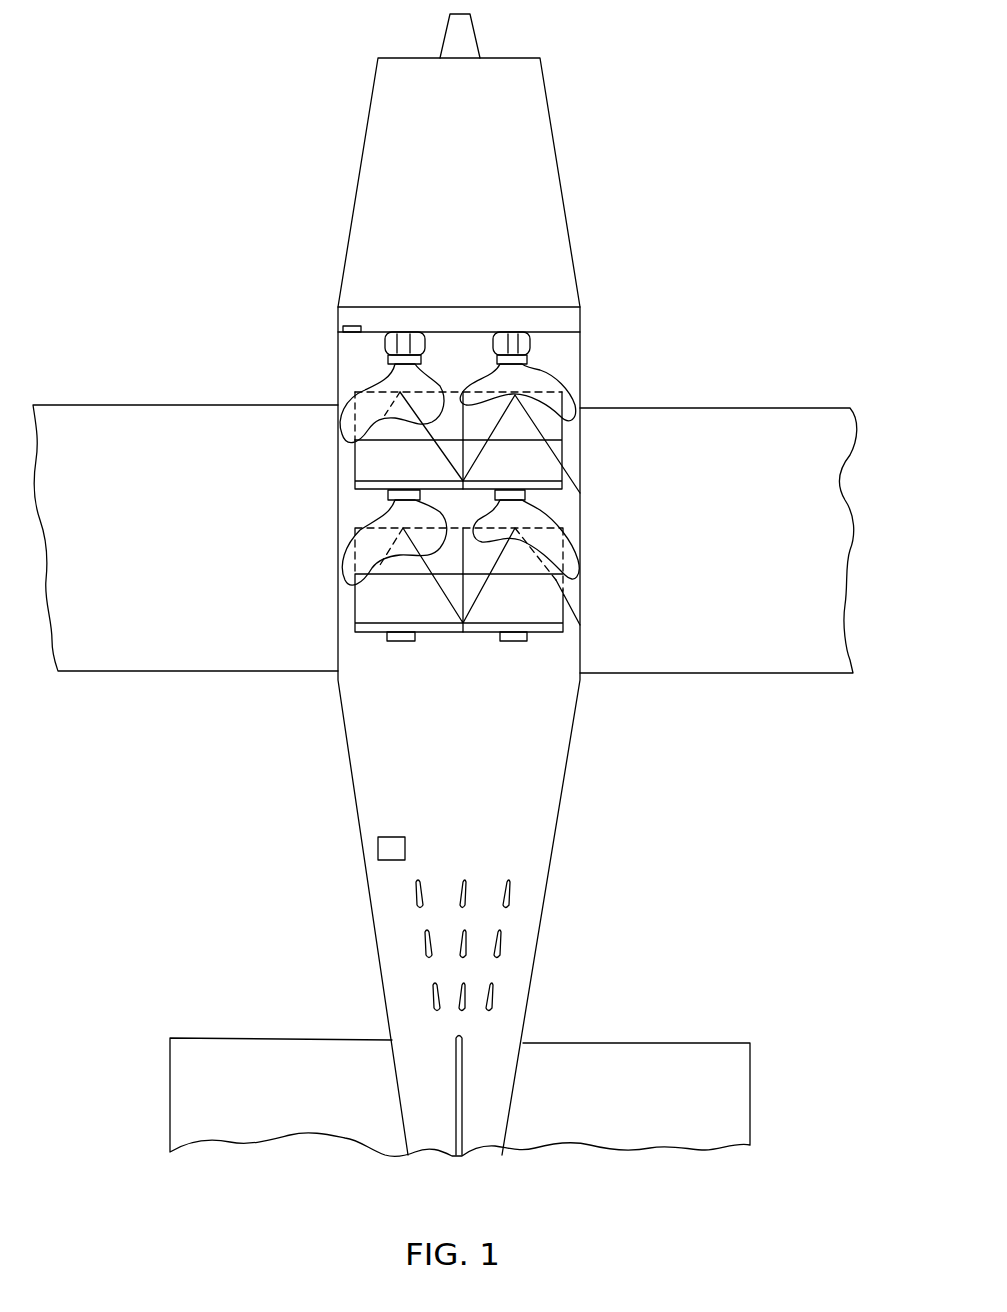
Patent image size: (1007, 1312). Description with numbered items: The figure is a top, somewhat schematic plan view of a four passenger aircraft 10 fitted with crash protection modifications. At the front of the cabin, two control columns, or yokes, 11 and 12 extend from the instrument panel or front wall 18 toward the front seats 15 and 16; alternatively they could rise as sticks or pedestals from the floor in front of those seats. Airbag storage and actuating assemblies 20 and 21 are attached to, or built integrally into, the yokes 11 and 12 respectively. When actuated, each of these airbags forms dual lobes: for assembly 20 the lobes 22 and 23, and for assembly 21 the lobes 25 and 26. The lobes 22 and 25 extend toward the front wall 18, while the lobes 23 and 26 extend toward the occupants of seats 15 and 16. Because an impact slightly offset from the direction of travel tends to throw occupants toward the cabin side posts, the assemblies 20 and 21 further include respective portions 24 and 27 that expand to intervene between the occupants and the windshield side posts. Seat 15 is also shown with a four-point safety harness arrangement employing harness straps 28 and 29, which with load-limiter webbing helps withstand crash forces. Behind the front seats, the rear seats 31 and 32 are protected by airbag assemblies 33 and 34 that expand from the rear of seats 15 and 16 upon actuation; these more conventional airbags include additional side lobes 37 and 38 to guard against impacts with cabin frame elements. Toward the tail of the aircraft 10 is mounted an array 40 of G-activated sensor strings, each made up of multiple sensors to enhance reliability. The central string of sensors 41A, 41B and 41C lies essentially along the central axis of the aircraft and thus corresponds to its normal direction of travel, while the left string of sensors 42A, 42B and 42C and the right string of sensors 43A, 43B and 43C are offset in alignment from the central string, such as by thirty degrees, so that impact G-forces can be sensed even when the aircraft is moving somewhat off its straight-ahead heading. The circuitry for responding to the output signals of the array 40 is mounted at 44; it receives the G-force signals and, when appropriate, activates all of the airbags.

The four passenger aircraft 10 is at (699, 188).
The control column 11 is at (384, 362).
The control column 12 is at (545, 352).
The seat 15 is at (378, 462).
The seat 16 is at (545, 463).
The front wall 18 is at (462, 312).
The airbag storage and actuating assembly 20 is at (352, 378).
The airbag storage and actuating assembly 21 is at (566, 351).
The lobe 22 is at (436, 332).
The lobe 23 is at (415, 384).
The portion 24 is at (352, 418).
The lobe 25 is at (556, 332).
The lobe 26 is at (545, 385).
The portion 27 is at (565, 412).
The harness strap 28 is at (356, 446).
The harness strap 29 is at (433, 462).
The rear seat 31 is at (375, 607).
The rear seat 32 is at (541, 613).
The airbag assembly 33 is at (375, 504).
The airbag assembly 34 is at (558, 506).
The side lobe 37 is at (355, 577).
The side lobe 38 is at (575, 562).
The array 40 is at (463, 808).
The sensor 41A is at (466, 892).
The sensor 41B is at (470, 942).
The sensor 41C is at (452, 1012).
The sensor 42A is at (415, 895).
The sensor 42B is at (425, 945).
The sensor 42C is at (433, 1000).
The sensor 43A is at (511, 895).
The sensor 43B is at (502, 950).
The sensor 43C is at (491, 1005).
The circuitry 44 is at (378, 847).